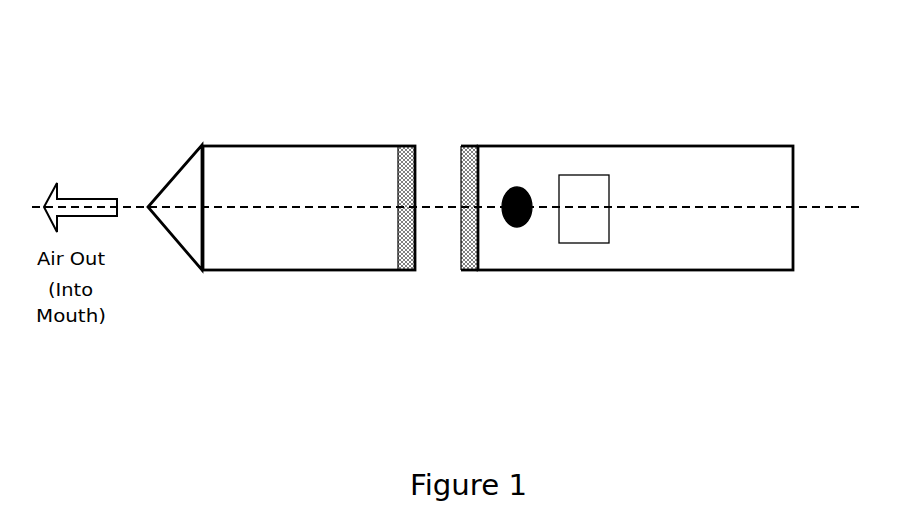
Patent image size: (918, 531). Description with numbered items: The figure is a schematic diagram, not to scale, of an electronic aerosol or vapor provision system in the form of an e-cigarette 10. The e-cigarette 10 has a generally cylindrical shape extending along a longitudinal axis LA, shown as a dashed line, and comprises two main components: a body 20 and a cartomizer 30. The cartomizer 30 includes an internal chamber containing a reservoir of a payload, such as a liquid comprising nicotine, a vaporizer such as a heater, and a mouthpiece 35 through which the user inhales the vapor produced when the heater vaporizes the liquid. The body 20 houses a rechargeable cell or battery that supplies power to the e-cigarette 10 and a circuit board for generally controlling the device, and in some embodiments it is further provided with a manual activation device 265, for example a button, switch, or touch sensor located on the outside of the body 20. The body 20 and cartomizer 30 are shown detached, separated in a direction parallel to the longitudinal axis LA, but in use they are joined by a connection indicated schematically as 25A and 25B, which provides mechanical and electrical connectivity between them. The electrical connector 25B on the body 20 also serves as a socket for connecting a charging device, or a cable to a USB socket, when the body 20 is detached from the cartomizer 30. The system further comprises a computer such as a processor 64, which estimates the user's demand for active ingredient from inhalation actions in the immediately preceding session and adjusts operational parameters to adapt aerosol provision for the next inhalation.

The e-cigarette 10 is at (185, 375).
The body 20 is at (649, 252).
The connection 25A is at (364, 254).
The electrical connector 25B is at (615, 146).
The cartomizer 30 is at (307, 172).
The mouthpiece 35 is at (138, 163).
The processor 64 is at (608, 257).
The manual activation device 265 is at (565, 283).
The longitudinal axis LA is at (447, 196).